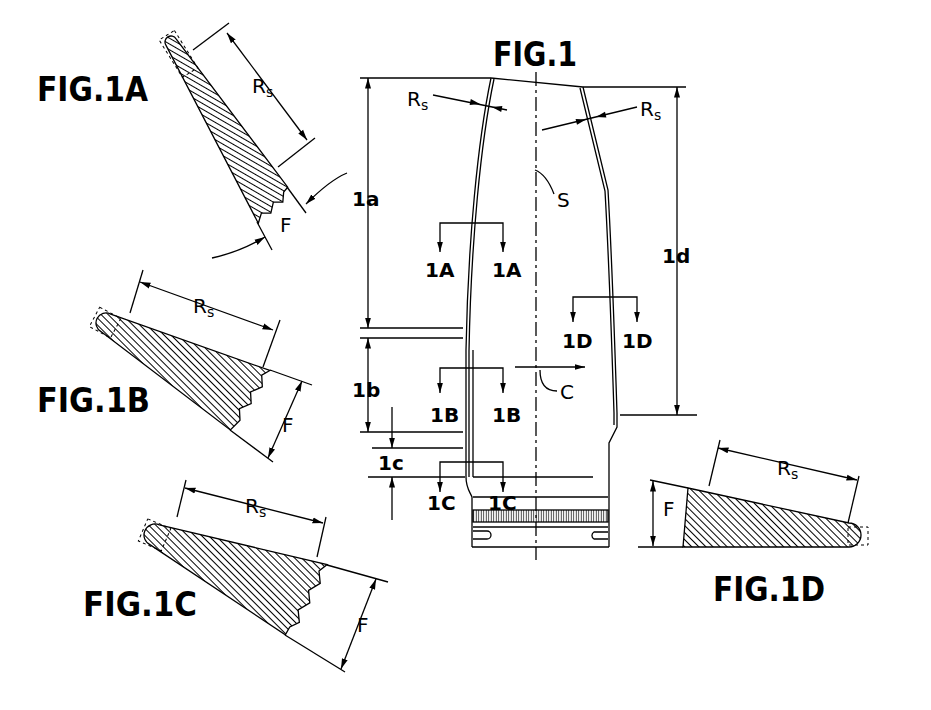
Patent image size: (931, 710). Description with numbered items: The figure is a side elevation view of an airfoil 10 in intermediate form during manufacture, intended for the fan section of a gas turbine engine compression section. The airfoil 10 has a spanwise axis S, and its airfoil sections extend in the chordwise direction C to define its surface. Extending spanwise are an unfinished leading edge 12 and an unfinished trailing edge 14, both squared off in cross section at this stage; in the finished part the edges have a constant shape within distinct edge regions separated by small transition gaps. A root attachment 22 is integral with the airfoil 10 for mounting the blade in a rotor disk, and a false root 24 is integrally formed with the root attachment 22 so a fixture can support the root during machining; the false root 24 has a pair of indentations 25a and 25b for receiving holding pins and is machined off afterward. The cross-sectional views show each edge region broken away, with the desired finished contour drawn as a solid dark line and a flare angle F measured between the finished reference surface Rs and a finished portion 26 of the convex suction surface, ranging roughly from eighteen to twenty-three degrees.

In FIG. 1, the airfoil 10 is at (588, 77).
In FIG. 1, the unfinished leading edge 12 is at (477, 135).
In FIG. 1, the unfinished trailing edge 14 is at (604, 163).
In FIG. 1, the root attachment 22 is at (466, 515).
In FIG. 1, the false root 24 is at (528, 540).
In FIG. 1, the indentation 25a is at (485, 540).
In FIG. 1, the indentation 25b is at (602, 540).
In FIG. 1A, the finished portion of the suction surface 26 is at (207, 143).
In FIG. 1B, the finished portion of the suction surface 26 is at (173, 388).
In FIG. 1C, the finished portion of the suction surface 26 is at (233, 600).